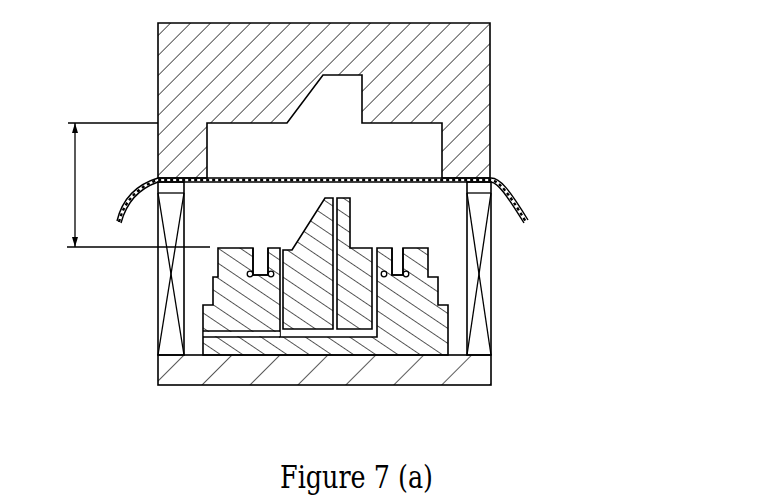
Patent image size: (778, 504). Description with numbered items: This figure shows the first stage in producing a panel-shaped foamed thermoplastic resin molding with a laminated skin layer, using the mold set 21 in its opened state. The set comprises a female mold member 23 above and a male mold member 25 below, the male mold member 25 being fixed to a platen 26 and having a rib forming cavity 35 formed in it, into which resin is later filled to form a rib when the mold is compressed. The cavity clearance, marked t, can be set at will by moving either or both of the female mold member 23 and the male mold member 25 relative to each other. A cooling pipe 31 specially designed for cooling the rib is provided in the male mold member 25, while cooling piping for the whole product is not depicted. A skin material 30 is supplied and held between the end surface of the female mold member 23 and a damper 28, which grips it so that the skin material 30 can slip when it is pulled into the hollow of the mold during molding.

The molding apparatus 21 is at (543, 133).
The female mold member 23 is at (487, 66).
The male mold member 25 is at (233, 310).
The platen 26 is at (488, 372).
The damper 28 is at (160, 270).
The skin material 30 is at (524, 204).
The cooling pipe 31 is at (251, 277).
The rib forming cavity 35 is at (250, 277).